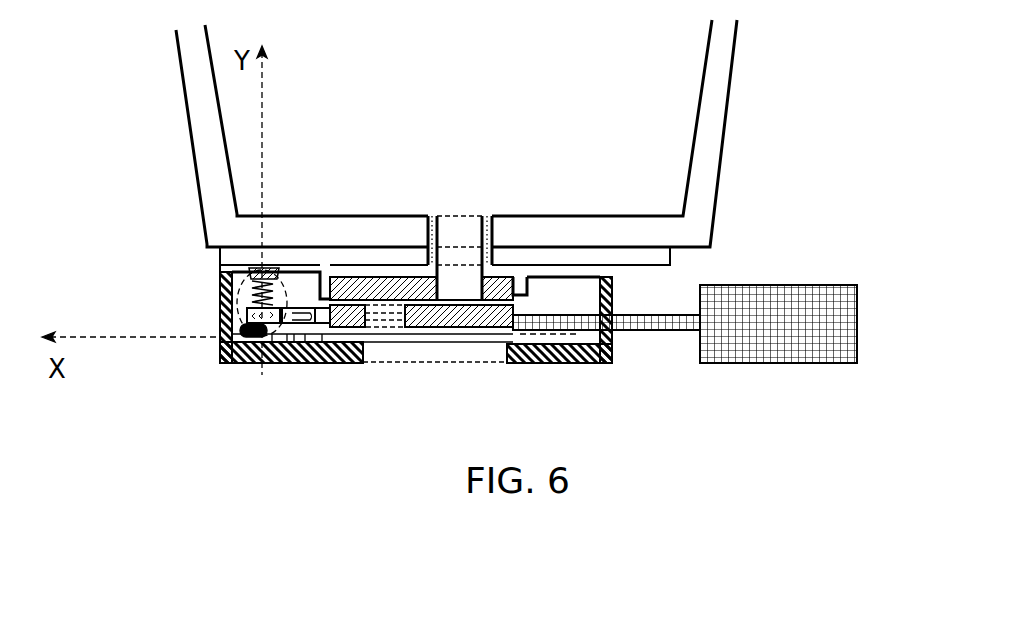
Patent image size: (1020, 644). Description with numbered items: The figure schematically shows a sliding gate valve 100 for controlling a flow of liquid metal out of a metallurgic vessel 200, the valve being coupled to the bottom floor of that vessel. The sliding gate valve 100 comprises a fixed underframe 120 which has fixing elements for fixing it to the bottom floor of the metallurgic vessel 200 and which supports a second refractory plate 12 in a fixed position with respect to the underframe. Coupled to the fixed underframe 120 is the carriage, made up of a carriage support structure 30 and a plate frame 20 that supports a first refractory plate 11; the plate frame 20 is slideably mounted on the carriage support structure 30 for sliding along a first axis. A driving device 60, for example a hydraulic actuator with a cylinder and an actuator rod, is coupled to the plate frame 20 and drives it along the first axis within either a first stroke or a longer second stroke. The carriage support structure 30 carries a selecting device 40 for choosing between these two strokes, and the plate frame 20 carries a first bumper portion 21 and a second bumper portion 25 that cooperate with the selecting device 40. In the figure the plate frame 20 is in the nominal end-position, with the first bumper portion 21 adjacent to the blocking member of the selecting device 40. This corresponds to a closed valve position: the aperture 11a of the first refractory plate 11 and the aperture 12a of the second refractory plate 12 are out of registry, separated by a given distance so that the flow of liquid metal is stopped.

The metallurgic vessel 200 is at (193, 143).
The sliding gate valve 100 is at (210, 372).
The second refractory plate 12 is at (397, 289).
The aperture of the second refractory plate 12a is at (463, 287).
The fixed underframe 120 is at (520, 285).
The first refractory plate 11 is at (430, 322).
The aperture of the first refractory plate 11a is at (377, 322).
The plate frame 20 is at (328, 327).
The first bumper portion 21 is at (278, 336).
The second bumper portion 25 is at (295, 326).
The selecting device 40 is at (224, 295).
The carriage support structure 30 is at (552, 363).
The driving device 60 is at (742, 363).